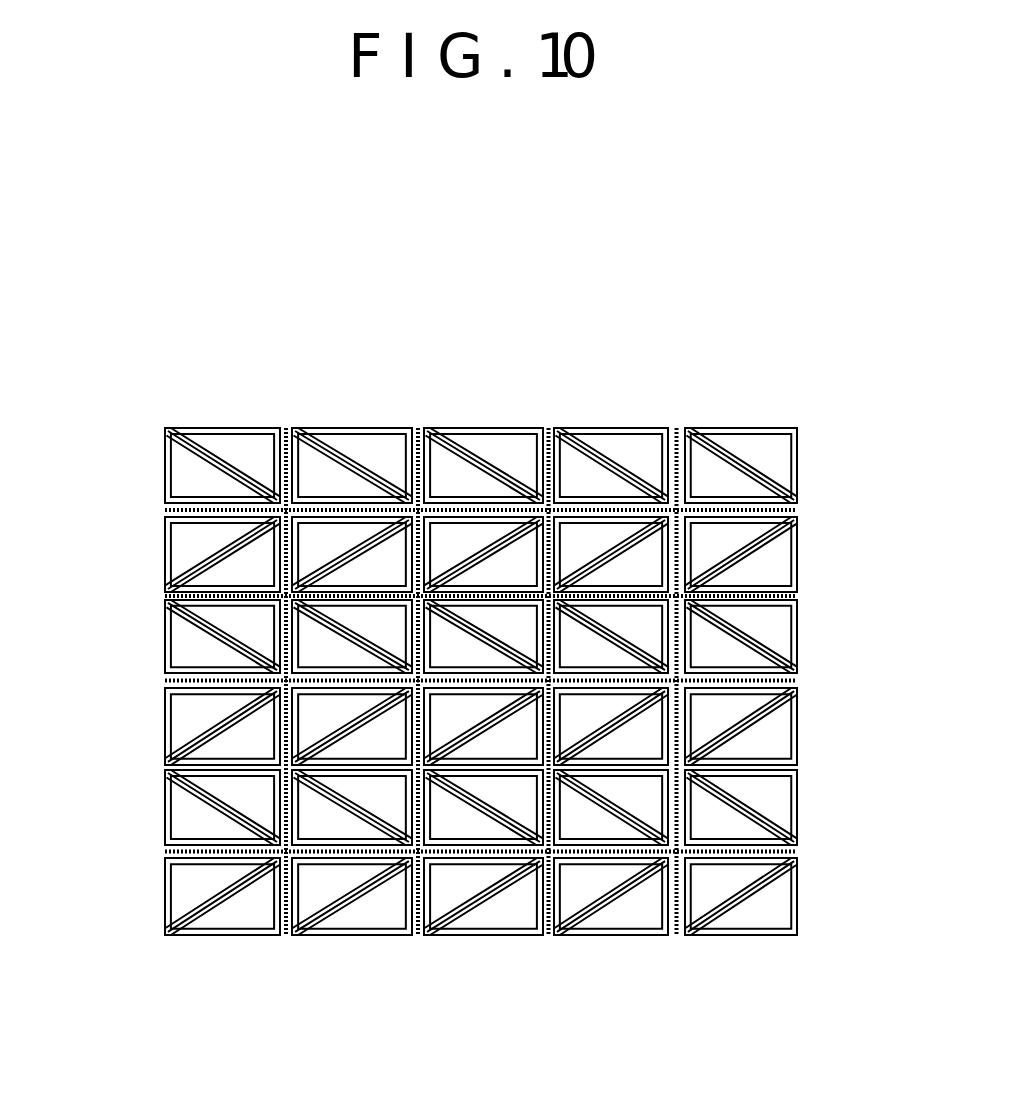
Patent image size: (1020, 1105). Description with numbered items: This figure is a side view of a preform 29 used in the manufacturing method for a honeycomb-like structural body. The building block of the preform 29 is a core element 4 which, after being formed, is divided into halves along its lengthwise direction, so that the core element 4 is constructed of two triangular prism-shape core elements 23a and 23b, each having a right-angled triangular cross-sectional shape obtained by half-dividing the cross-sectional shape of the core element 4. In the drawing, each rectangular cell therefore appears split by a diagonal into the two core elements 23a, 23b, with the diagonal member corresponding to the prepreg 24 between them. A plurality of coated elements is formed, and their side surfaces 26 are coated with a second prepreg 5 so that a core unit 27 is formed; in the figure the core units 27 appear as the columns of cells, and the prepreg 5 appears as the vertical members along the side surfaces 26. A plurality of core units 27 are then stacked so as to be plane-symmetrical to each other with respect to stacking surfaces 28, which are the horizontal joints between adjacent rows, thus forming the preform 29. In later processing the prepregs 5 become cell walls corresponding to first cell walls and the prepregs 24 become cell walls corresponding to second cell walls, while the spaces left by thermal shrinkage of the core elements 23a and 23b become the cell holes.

The preform 29 is at (476, 633).
The core element 4 is at (408, 292).
The core element 23b is at (314, 543).
The core element 23a is at (354, 583).
The stacking surface 28 is at (490, 503).
The core unit 27 is at (802, 552).
The prepreg 5 is at (190, 701).
The side surface 26 is at (218, 842).
The prepreg 24 is at (488, 826).